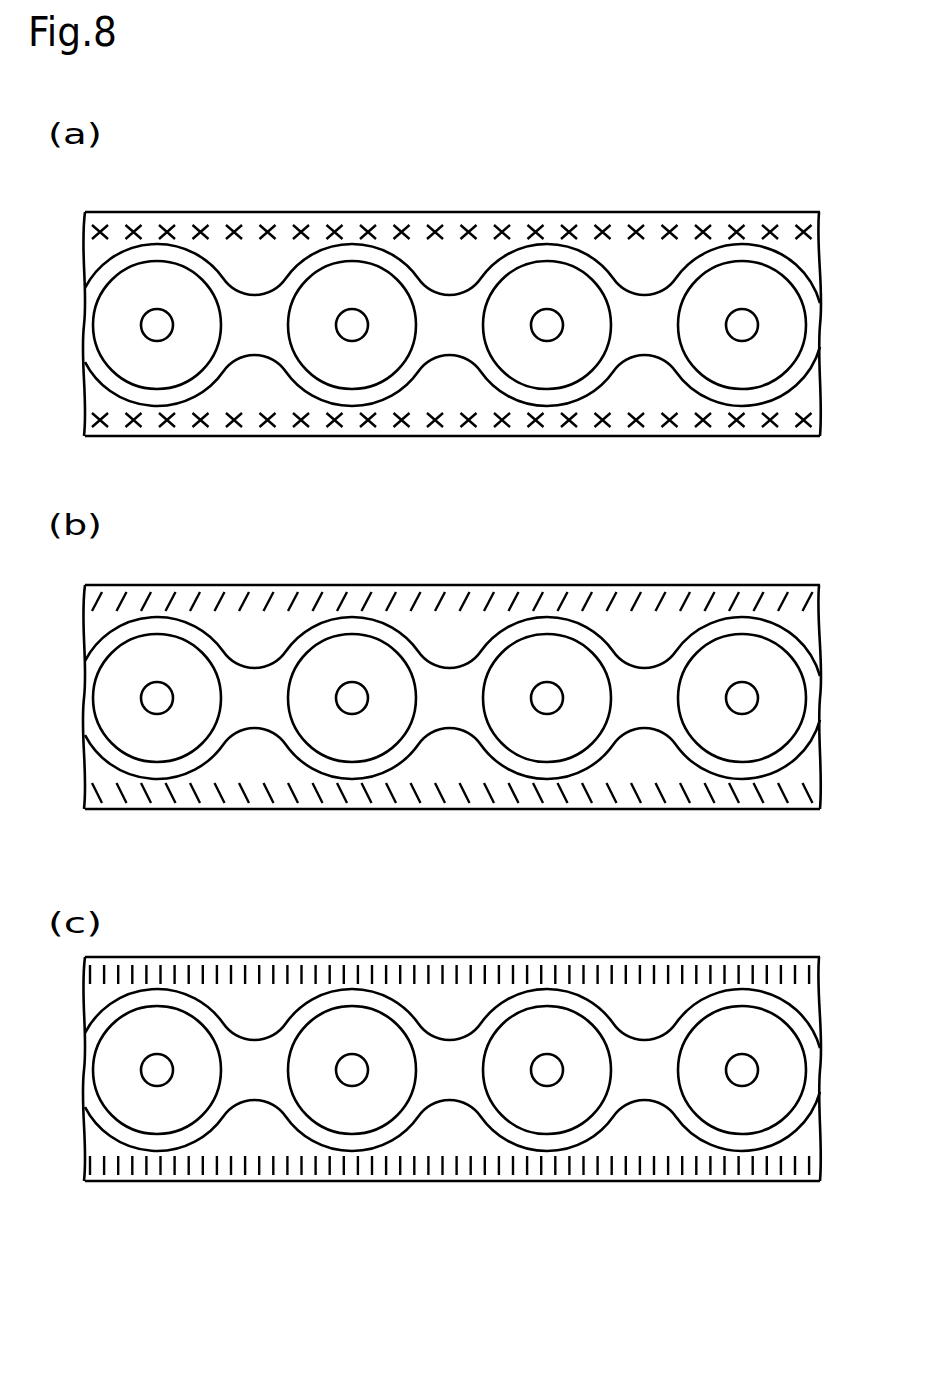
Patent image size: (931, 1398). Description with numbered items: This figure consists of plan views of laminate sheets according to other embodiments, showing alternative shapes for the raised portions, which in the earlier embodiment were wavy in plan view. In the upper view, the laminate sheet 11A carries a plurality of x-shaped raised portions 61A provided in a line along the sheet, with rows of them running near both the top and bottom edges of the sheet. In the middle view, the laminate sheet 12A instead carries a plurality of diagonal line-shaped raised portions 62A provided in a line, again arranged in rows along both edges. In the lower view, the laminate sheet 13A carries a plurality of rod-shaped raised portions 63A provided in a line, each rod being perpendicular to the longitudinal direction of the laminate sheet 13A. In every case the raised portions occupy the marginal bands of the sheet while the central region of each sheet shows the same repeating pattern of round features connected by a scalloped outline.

The laminate sheet 11A is at (795, 203).
The laminate sheet 12A is at (795, 576).
The laminate sheet 13A is at (795, 949).
The x-shaped raised portions 61A is at (633, 225).
The diagonal line-shaped raised portions 62A is at (440, 600).
The rod-shaped raised portions 63A is at (630, 975).